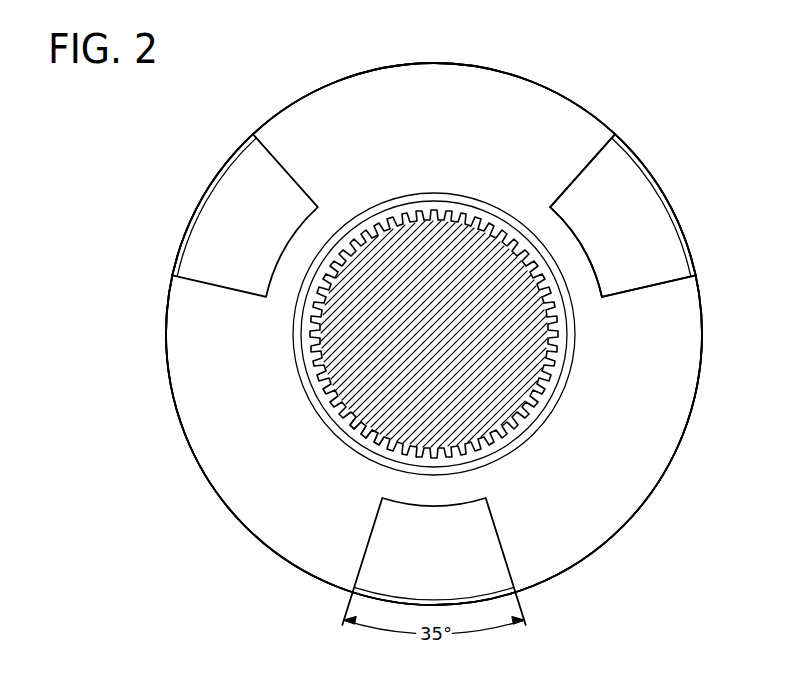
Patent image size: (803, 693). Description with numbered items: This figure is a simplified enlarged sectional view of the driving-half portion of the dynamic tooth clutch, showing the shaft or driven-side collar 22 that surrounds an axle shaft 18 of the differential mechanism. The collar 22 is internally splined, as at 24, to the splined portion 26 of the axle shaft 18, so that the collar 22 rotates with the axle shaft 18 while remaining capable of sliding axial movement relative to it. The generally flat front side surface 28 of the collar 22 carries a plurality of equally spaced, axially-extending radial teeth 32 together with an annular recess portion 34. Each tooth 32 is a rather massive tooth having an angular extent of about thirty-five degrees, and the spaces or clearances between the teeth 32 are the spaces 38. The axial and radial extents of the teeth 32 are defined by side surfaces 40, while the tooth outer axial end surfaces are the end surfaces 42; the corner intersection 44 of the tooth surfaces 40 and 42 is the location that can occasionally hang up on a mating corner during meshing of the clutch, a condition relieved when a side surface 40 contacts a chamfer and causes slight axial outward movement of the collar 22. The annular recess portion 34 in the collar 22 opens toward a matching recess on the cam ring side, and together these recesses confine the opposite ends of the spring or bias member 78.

The axle shaft 18 is at (525, 362).
The driven-side collar 22 is at (180, 420).
The internal splines 24 is at (412, 210).
The splined portion 26 is at (355, 436).
The front side surface 28 is at (660, 485).
The radial teeth 32 is at (648, 240).
The annular recess portion 34 is at (570, 257).
The spaces between teeth 38 is at (458, 120).
The side surfaces 40 is at (573, 177).
The tooth outer axial end surfaces 42 is at (635, 207).
The corner intersection 44 is at (597, 148).
The spring or bias member 78 is at (300, 347).